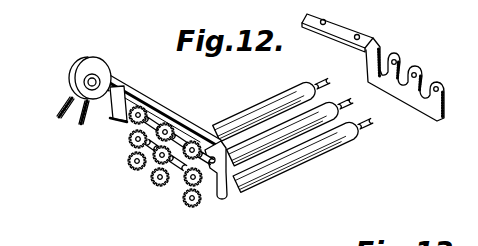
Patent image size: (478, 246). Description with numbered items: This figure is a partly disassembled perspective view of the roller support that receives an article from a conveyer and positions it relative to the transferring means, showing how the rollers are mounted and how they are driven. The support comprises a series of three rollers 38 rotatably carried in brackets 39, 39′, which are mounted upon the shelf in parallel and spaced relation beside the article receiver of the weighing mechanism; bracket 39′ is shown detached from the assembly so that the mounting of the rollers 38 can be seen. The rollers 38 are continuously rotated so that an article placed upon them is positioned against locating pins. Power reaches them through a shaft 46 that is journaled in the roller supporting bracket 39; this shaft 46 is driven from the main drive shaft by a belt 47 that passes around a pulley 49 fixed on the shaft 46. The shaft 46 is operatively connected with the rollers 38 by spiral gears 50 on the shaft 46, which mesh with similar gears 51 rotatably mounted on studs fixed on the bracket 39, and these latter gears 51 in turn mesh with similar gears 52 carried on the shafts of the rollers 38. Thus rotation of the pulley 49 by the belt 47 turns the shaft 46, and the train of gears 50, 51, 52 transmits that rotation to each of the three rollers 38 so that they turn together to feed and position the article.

The rollers 38 is at (285, 152).
The roller supporting bracket 39 is at (167, 135).
The bracket 39' is at (373, 62).
The shaft 46 is at (117, 105).
The belt 47 is at (62, 94).
The pulley 49 is at (97, 62).
The spiral gears 50 is at (204, 140).
The gears 51 is at (128, 162).
The gears 52 is at (182, 198).